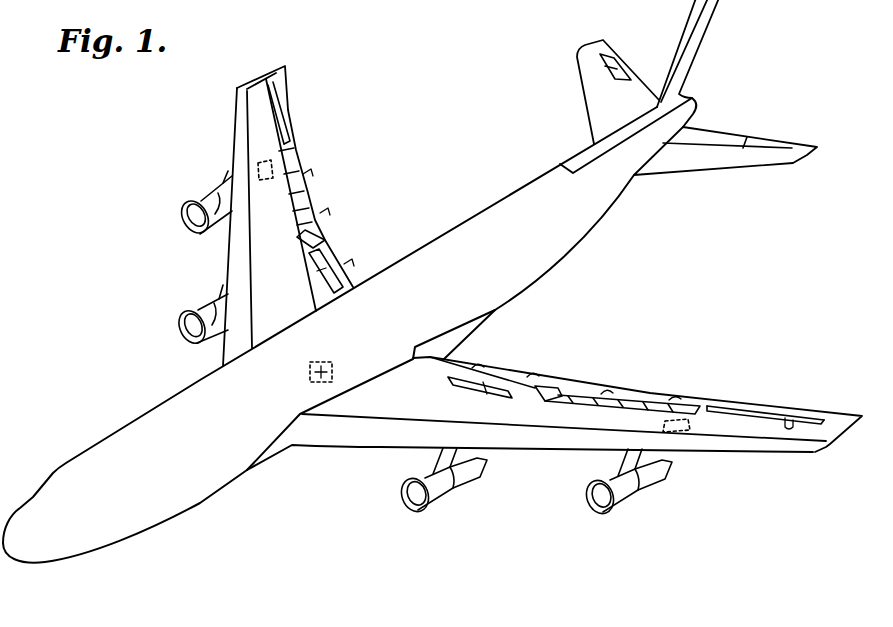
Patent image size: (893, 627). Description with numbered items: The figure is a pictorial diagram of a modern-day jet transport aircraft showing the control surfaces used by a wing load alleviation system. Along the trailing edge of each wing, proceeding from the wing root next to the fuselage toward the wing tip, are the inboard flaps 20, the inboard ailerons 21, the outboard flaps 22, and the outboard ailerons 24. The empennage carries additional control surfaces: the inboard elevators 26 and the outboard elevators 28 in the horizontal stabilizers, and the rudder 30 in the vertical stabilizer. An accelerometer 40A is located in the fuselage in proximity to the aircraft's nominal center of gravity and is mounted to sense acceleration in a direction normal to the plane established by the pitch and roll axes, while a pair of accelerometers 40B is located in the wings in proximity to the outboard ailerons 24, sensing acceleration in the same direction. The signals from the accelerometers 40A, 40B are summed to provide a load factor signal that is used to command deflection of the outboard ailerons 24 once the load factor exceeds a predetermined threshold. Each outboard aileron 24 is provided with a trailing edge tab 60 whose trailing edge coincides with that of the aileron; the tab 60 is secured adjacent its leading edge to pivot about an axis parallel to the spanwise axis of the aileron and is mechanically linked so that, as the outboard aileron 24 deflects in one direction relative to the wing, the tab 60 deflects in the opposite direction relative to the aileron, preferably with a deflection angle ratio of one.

The inboard flaps 20 is at (333, 256).
The inboard ailerons 21 is at (318, 237).
The outboard flaps 22 is at (303, 196).
The outboard ailerons 24 is at (271, 97).
The inboard elevators 26 is at (630, 77).
The outboard elevators 28 is at (613, 56).
The rudder 30 is at (704, 26).
The accelerometer 40A is at (338, 360).
The accelerometers 40B is at (254, 158).
The trailing edge tab 60 is at (292, 127).